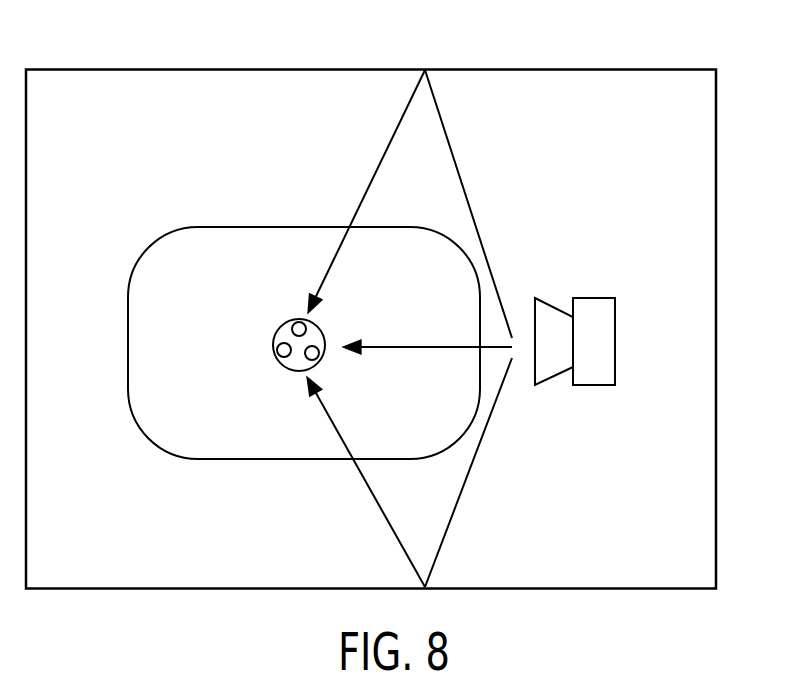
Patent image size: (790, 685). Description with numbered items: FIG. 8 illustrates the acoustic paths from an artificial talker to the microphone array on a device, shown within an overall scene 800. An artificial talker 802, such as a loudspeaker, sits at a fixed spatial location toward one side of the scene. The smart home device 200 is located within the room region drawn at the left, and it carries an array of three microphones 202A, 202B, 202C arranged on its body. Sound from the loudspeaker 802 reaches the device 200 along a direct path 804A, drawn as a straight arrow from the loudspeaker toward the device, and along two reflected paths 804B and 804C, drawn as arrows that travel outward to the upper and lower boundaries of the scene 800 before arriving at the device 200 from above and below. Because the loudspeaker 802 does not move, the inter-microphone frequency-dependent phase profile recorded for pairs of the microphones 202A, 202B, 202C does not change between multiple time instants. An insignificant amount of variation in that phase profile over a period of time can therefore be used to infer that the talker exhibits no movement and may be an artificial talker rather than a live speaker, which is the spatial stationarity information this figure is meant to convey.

The environment / room 800 is at (157, 69).
The artificial talker 802 is at (585, 298).
The direct path 804A is at (432, 346).
The reflected path 804B is at (368, 183).
The reflected path 804C is at (358, 472).
The device 200 is at (277, 352).
The microphone 202A is at (278, 345).
The microphone 202B is at (293, 322).
The microphone 202C is at (305, 357).